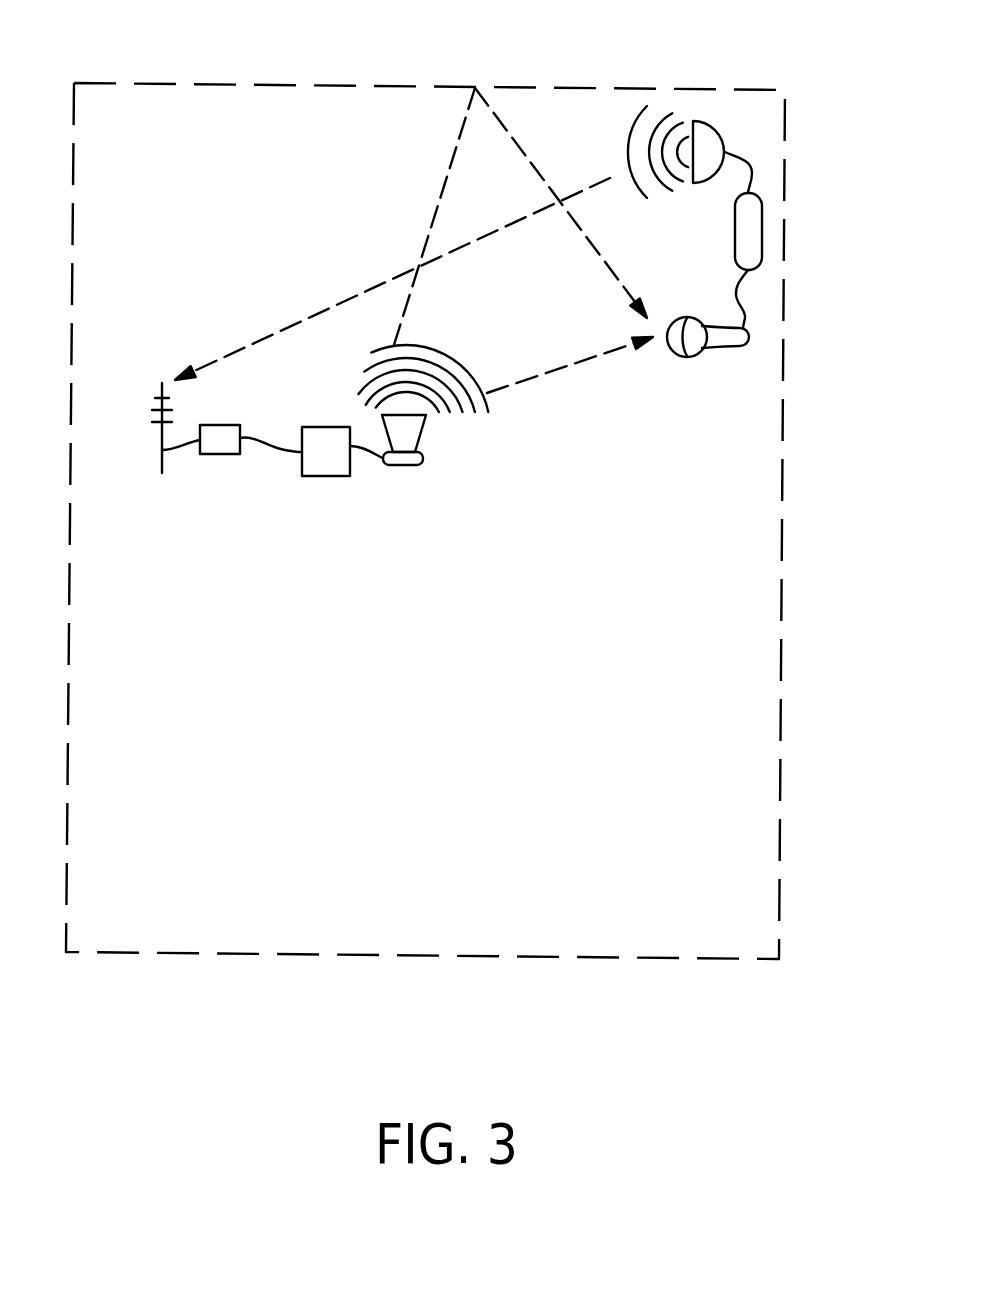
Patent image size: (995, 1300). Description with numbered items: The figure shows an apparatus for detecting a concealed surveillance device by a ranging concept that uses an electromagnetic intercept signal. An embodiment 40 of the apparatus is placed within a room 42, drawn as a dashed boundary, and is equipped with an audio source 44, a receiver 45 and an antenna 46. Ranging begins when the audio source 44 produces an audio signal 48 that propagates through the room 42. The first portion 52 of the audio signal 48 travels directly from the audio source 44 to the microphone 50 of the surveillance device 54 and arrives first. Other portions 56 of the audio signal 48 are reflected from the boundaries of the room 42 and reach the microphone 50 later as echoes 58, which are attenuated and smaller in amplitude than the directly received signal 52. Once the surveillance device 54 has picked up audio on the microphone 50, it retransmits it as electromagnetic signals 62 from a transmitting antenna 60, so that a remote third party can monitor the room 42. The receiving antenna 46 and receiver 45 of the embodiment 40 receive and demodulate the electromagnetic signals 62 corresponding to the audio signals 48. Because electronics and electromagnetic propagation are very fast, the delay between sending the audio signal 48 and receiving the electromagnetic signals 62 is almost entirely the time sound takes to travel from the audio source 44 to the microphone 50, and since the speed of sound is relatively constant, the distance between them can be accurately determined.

The embodiment 40 is at (321, 427).
The room 42 is at (520, 88).
The audio source 44 is at (405, 465).
The receiver 45 is at (218, 454).
The antenna 46 is at (162, 468).
The audio signal 48 is at (478, 418).
The microphone 50 is at (718, 348).
The first portion of the audio signal 52 is at (590, 357).
The surveillance device 54 is at (762, 240).
The other portions of the audio signal 56 is at (443, 183).
The echoes 58 is at (590, 248).
The transmitting antenna 60 is at (722, 133).
The electromagnetic signals 62 is at (634, 110).